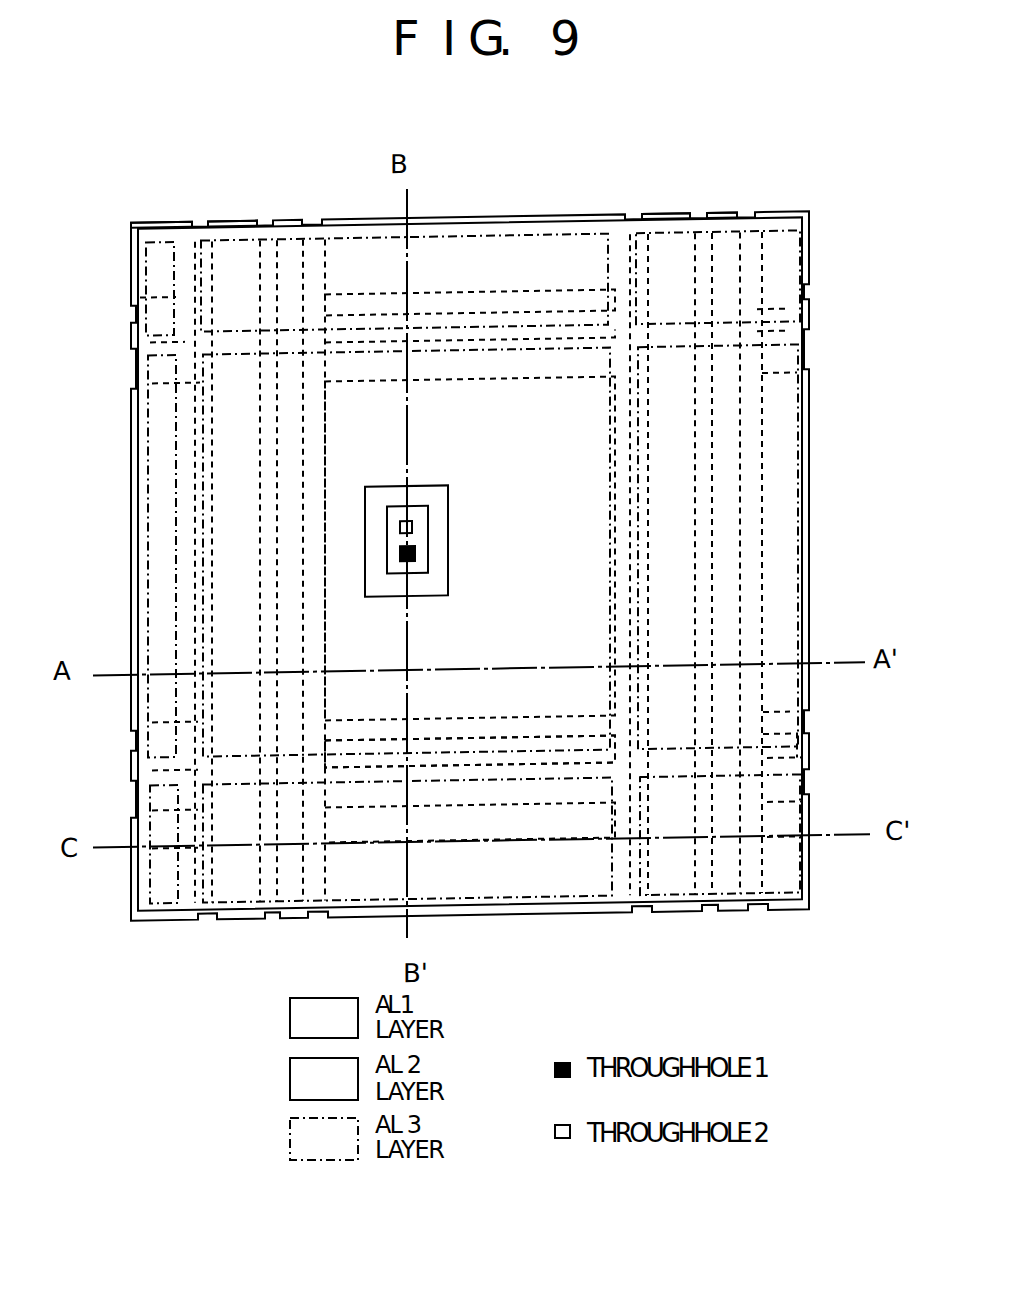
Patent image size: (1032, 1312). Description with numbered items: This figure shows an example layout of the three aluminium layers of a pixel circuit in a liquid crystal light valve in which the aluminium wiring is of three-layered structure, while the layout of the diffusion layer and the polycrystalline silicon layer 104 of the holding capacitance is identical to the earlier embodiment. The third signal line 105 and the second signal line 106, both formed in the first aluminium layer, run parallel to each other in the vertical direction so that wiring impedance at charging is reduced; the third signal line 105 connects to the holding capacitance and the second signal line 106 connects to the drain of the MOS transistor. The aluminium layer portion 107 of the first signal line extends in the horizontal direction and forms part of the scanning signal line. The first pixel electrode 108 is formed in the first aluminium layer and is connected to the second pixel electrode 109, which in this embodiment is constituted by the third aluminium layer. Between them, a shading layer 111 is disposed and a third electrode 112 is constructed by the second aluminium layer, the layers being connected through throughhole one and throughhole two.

The polycrystalline silicon layer 104 is at (312, 317).
The third signal line 105 is at (227, 216).
The second signal line 106 is at (287, 218).
The aluminium layer portion of the first signal line 107 is at (480, 313).
The first pixel electrode 108 is at (498, 379).
The second pixel electrode 109 is at (465, 752).
The shading layer 111 is at (447, 503).
The third electrode 112 is at (428, 560).